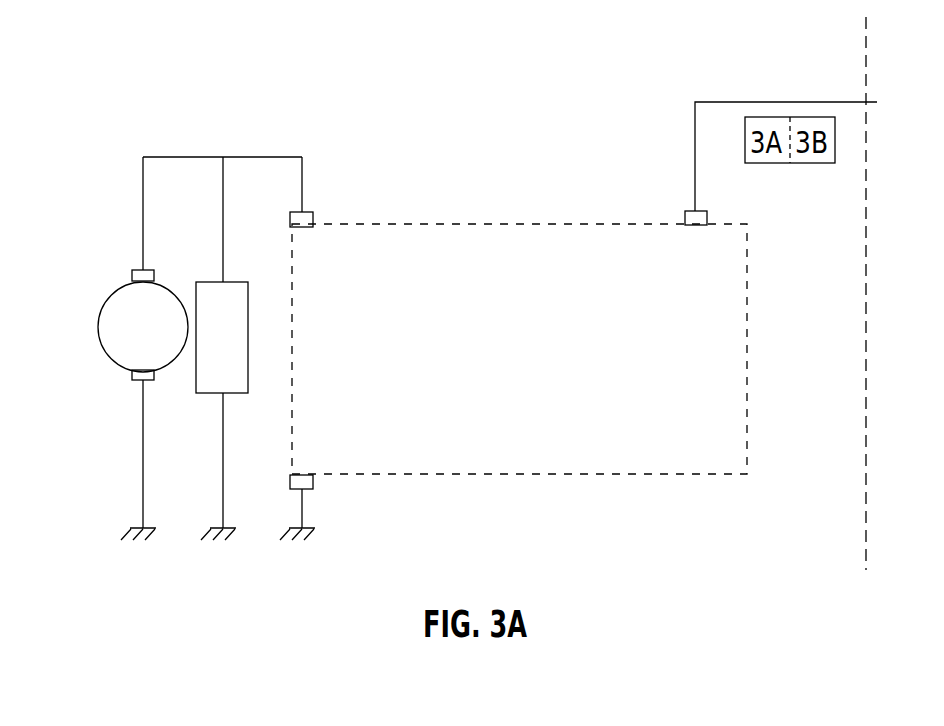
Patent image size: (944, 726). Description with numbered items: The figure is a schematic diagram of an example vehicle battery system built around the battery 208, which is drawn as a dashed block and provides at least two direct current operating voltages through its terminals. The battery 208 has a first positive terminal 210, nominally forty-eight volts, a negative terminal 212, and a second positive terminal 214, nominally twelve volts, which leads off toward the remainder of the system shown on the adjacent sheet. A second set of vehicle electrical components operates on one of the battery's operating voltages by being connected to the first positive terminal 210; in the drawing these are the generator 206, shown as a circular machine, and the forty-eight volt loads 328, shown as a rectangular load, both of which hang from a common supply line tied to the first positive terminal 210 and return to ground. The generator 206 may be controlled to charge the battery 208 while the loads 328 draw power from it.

The generator 206 is at (119, 291).
The 48 V loads 328 is at (240, 283).
The battery 208 is at (517, 223).
The first positive terminal 210 is at (305, 211).
The negative terminal 212 is at (313, 481).
The second positive terminal 214 is at (688, 210).